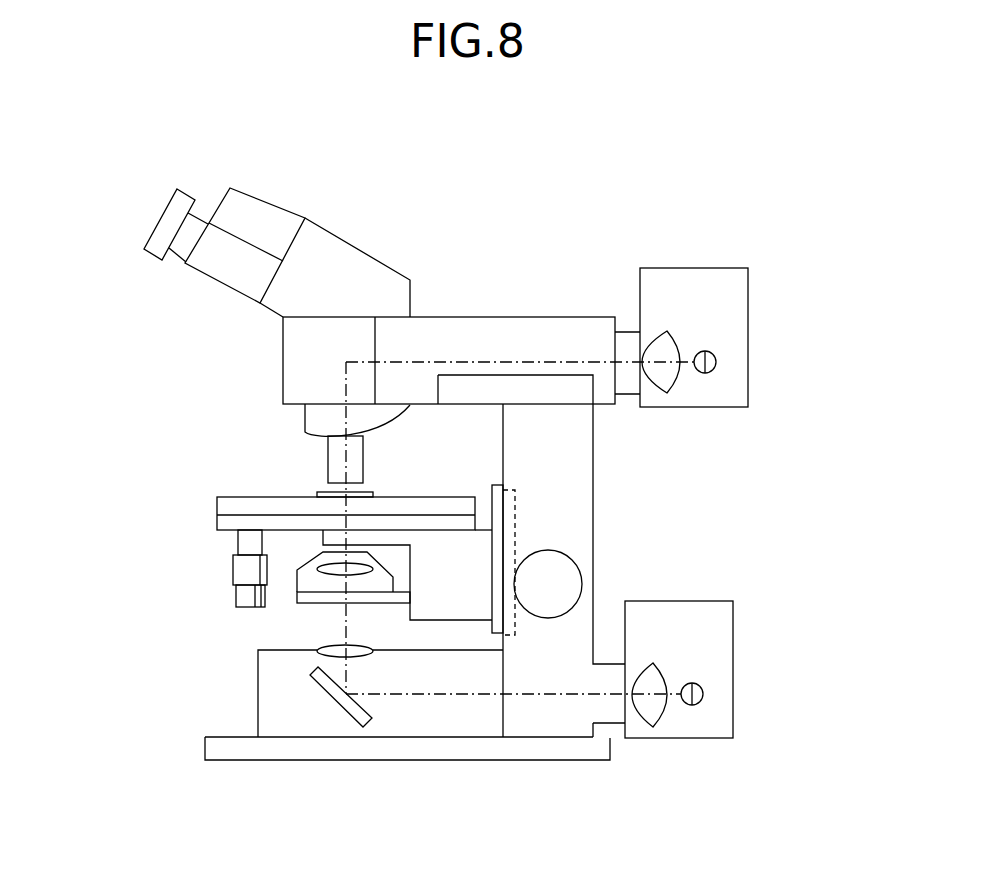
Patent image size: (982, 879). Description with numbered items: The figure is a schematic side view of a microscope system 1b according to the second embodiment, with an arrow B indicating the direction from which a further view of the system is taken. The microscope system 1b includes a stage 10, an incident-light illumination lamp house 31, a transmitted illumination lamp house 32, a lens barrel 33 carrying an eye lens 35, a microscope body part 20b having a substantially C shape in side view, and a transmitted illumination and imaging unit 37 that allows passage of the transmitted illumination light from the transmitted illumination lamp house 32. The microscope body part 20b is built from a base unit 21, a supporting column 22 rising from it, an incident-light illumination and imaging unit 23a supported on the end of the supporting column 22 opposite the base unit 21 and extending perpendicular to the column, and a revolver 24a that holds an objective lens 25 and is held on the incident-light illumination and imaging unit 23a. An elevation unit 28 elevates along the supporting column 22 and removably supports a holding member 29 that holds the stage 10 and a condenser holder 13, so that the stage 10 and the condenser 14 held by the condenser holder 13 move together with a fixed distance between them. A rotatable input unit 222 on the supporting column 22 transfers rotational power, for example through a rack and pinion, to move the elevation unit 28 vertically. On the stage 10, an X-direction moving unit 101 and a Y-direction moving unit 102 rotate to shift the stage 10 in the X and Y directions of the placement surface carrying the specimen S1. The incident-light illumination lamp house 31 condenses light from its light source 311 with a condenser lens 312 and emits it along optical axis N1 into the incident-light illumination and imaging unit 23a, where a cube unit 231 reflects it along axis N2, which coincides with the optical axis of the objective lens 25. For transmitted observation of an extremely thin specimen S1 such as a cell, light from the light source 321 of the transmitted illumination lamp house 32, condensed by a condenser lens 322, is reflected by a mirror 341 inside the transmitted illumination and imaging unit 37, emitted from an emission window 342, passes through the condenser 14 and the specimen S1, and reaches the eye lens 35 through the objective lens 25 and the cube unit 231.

The microscope system 1b is at (443, 166).
The stage 10 is at (230, 503).
The condenser holder 13 is at (385, 598).
The condenser 14 is at (307, 568).
The microscope body part 20b is at (614, 446).
The base unit 21 is at (515, 748).
The supporting column 22 is at (580, 518).
The input unit 222 is at (572, 578).
The incident-light illumination and imaging unit 23a is at (563, 338).
The cube unit 231 is at (298, 335).
The revolver 24a is at (317, 420).
The objective lens 25 is at (327, 455).
The elevation unit 28 is at (516, 518).
The holding member 29 is at (456, 600).
The incident-light illumination lamp house 31 is at (728, 305).
The light source 311 is at (717, 368).
The condenser lens 312 is at (673, 388).
The transmitted illumination lamp house 32 is at (722, 628).
The light source 321 is at (703, 700).
The condenser lens 322 is at (662, 718).
The lens barrel 33 is at (345, 258).
The mirror 341 is at (345, 705).
The emission window 342 is at (320, 654).
The eye lens 35 is at (167, 215).
The transmitted illumination and imaging unit 37 is at (430, 720).
The X-direction moving unit 101 is at (230, 570).
The Y-direction moving unit 102 is at (230, 597).
The optical axis N1 is at (470, 360).
The axis N2 is at (344, 377).
The specimen S1 is at (373, 495).
The arrow B is at (98, 682).